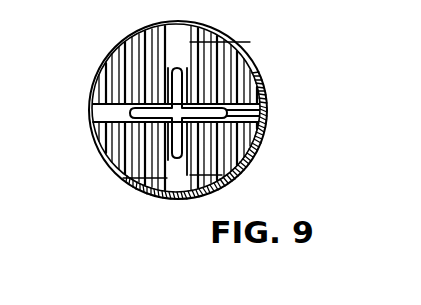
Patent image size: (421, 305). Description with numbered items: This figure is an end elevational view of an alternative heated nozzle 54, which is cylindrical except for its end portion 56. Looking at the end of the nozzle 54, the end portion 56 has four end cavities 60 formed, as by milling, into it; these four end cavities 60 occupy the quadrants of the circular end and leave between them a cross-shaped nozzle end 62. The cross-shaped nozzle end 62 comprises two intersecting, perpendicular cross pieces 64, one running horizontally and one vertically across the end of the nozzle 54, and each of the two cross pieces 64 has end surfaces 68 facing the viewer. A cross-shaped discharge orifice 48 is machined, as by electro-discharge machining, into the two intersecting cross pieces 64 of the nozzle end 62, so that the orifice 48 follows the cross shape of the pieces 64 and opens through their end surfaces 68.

The cross-shaped discharge orifice 48 is at (176, 80).
The heated nozzle 54 is at (288, 80).
The end portion 56 is at (125, 184).
The end cavities 60 is at (215, 67).
The cross-shaped nozzle end 62 is at (255, 112).
The cross pieces 64 is at (188, 198).
The end surfaces 68 is at (105, 111).